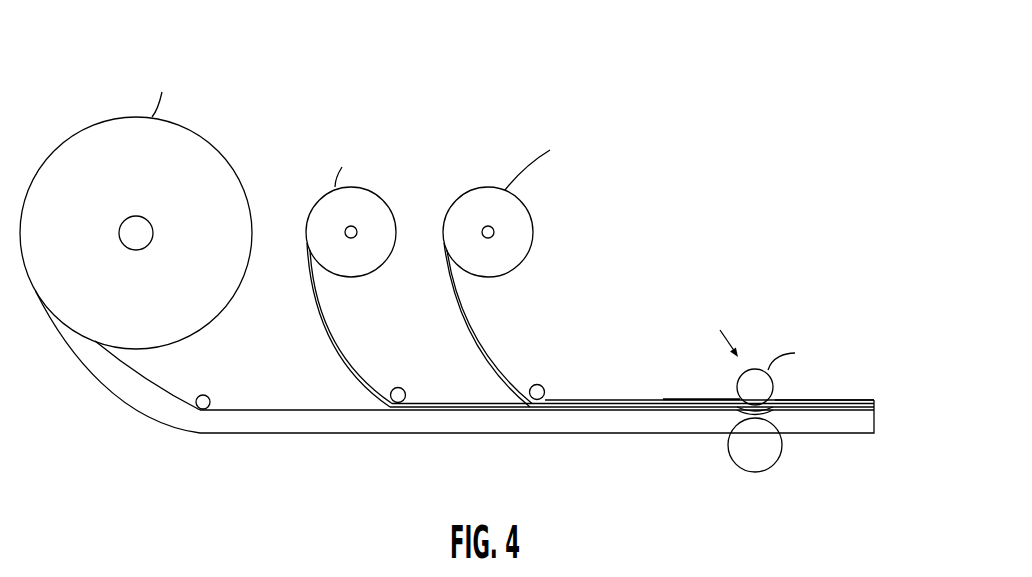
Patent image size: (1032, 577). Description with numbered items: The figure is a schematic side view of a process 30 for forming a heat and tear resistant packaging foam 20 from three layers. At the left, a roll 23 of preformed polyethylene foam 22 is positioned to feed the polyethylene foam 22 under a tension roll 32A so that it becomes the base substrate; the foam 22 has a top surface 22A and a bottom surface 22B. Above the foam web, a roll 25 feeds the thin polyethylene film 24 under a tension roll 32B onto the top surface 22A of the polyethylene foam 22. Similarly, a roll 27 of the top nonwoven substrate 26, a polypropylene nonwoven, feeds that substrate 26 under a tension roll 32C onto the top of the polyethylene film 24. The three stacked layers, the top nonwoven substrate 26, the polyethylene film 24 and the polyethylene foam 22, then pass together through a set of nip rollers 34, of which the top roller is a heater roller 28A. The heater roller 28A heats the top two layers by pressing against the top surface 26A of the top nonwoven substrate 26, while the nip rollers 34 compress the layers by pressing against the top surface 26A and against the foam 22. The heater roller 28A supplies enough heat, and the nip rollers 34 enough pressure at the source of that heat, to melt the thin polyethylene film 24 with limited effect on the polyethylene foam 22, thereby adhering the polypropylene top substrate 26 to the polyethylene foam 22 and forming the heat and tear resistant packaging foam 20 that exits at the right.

The heat and tear resistant packaging foam 20 is at (801, 390).
The polyethylene foam 22 is at (167, 407).
The top surface of the polyethylene foam 22A is at (282, 408).
The bottom surface of foam web 22B is at (575, 433).
The roll of polyethylene foam 23 is at (222, 158).
The polyethylene film 24 is at (352, 345).
The roll of polyethylene film 25 is at (377, 209).
The top nonwoven substrate 26 is at (510, 373).
The top surface of the top nonwoven substrate 26A is at (471, 405).
The roll of top nonwoven substrate 27 is at (523, 230).
The heater roller 28A is at (752, 368).
The process 30 is at (650, 39).
The tension roll 32A is at (212, 402).
The tension roll 32B is at (405, 390).
The tension roll 32C is at (545, 387).
The nip rollers 34 is at (773, 474).